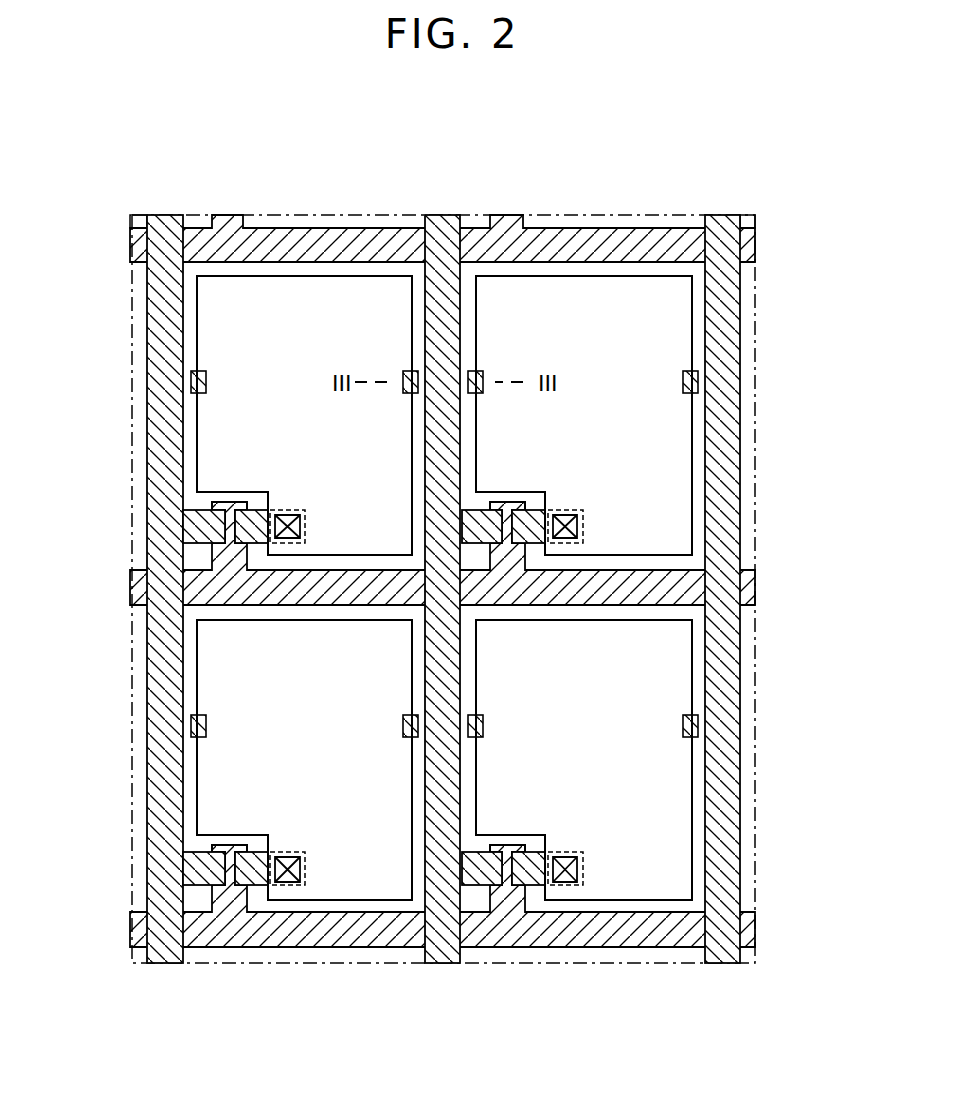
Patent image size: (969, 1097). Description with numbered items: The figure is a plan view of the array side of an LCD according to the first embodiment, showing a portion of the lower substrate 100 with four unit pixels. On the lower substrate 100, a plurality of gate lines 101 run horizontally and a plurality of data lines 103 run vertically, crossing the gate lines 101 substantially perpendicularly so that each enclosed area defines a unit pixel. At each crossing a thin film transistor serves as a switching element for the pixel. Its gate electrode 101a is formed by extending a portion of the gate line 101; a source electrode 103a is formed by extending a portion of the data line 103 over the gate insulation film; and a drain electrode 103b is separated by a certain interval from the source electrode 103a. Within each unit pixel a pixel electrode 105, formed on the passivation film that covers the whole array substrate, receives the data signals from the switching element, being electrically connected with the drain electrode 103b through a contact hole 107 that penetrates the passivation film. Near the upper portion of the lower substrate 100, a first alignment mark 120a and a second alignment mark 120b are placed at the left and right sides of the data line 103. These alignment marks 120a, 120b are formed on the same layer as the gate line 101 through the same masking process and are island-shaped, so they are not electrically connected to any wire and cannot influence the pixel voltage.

The lower substrate 100 is at (115, 212).
The gate line 101 is at (757, 927).
The gate electrode 101a is at (508, 888).
The data line 103 is at (441, 228).
The source electrode 103a is at (480, 877).
The drain electrode 103b is at (530, 875).
The pixel electrode 105 is at (683, 443).
The contact hole 107 is at (573, 885).
The first alignment mark 120a is at (404, 371).
The second alignment mark 120b is at (479, 372).